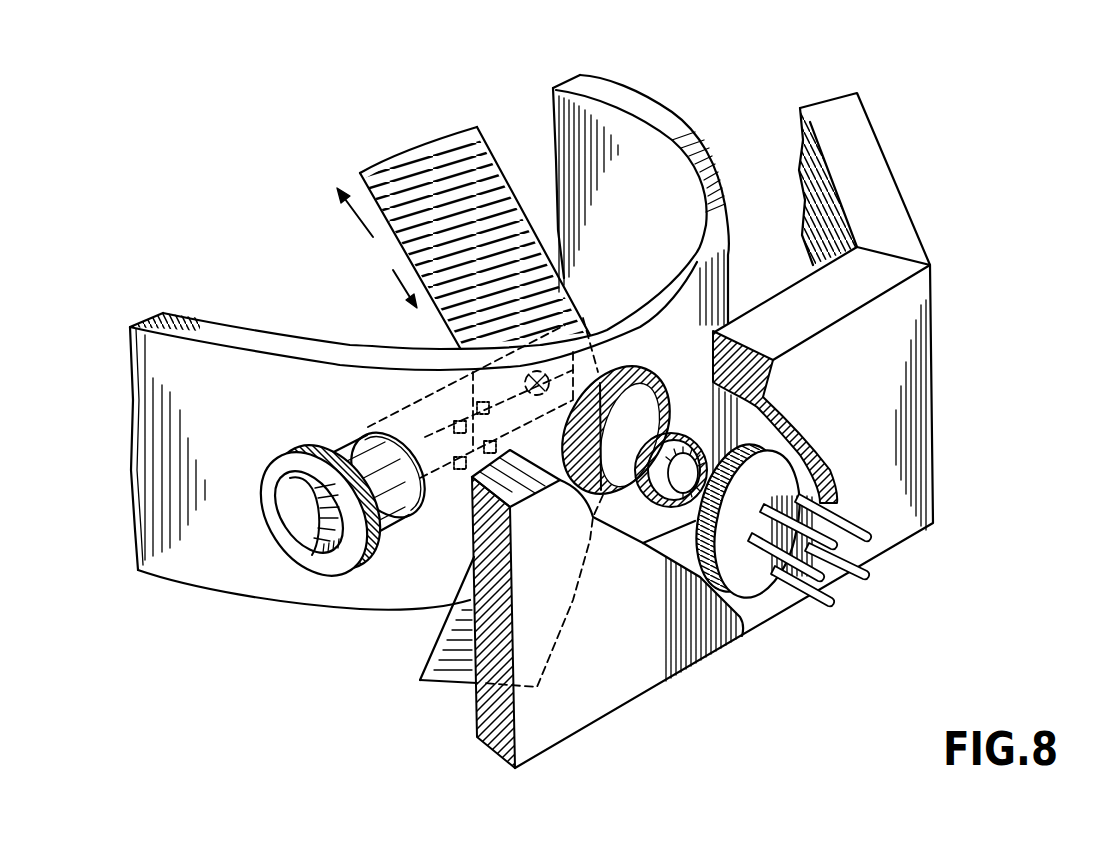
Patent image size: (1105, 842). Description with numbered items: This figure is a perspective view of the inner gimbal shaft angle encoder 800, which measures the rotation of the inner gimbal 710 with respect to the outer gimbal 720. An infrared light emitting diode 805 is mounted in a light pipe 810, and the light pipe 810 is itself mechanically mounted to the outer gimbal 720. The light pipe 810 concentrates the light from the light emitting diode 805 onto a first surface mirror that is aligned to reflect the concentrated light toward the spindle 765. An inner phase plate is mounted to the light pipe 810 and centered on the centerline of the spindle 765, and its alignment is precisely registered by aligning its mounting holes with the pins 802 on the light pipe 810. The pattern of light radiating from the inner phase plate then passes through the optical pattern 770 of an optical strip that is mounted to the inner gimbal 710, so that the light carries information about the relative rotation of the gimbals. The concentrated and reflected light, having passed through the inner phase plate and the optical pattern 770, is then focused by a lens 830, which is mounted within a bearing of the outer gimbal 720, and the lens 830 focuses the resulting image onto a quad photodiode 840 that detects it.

The inner gimbal 710 is at (377, 248).
The outer gimbal 720 is at (429, 342).
The spindle 765 is at (587, 563).
The optical pattern 770 is at (492, 145).
The inner gimbal shaft angle encoder 800 is at (672, 679).
The pins 802 is at (432, 397).
The infrared light emitting diode 805 is at (296, 540).
The light pipe 810 is at (318, 578).
The lens 830 is at (685, 437).
The quad photodiode 840 is at (770, 596).